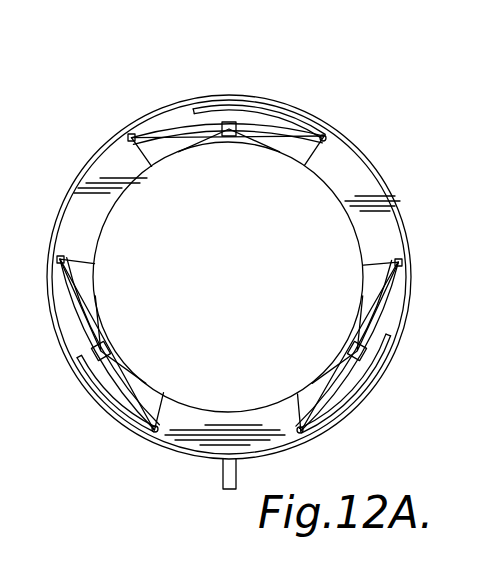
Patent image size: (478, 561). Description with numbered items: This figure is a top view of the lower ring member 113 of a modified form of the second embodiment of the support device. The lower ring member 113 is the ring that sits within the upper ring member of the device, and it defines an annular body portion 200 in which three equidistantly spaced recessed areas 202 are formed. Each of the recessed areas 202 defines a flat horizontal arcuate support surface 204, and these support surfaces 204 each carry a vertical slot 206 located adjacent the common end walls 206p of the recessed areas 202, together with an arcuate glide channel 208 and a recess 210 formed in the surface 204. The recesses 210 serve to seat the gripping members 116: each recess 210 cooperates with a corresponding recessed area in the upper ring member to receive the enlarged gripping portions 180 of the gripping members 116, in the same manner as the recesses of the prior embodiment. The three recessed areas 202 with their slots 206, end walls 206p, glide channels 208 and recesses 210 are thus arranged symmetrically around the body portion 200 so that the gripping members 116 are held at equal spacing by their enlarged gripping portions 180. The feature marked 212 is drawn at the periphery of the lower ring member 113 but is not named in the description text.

The lower ring member 113 is at (355, 144).
The annular body portion 200 is at (357, 213).
The peg/tab 212 is at (145, 450).
The flat horizontal arcuate support surface 204 is at (247, 117).
The arcuate glide channel 208 is at (195, 108).
The vertical slot 206 is at (323, 135).
The common end wall 206p is at (313, 163).
The recessed area 202 is at (293, 152).
The enlarged gripping portion 180 is at (217, 143).
The gripping member 116 is at (183, 139).
The recess 210 is at (230, 135).